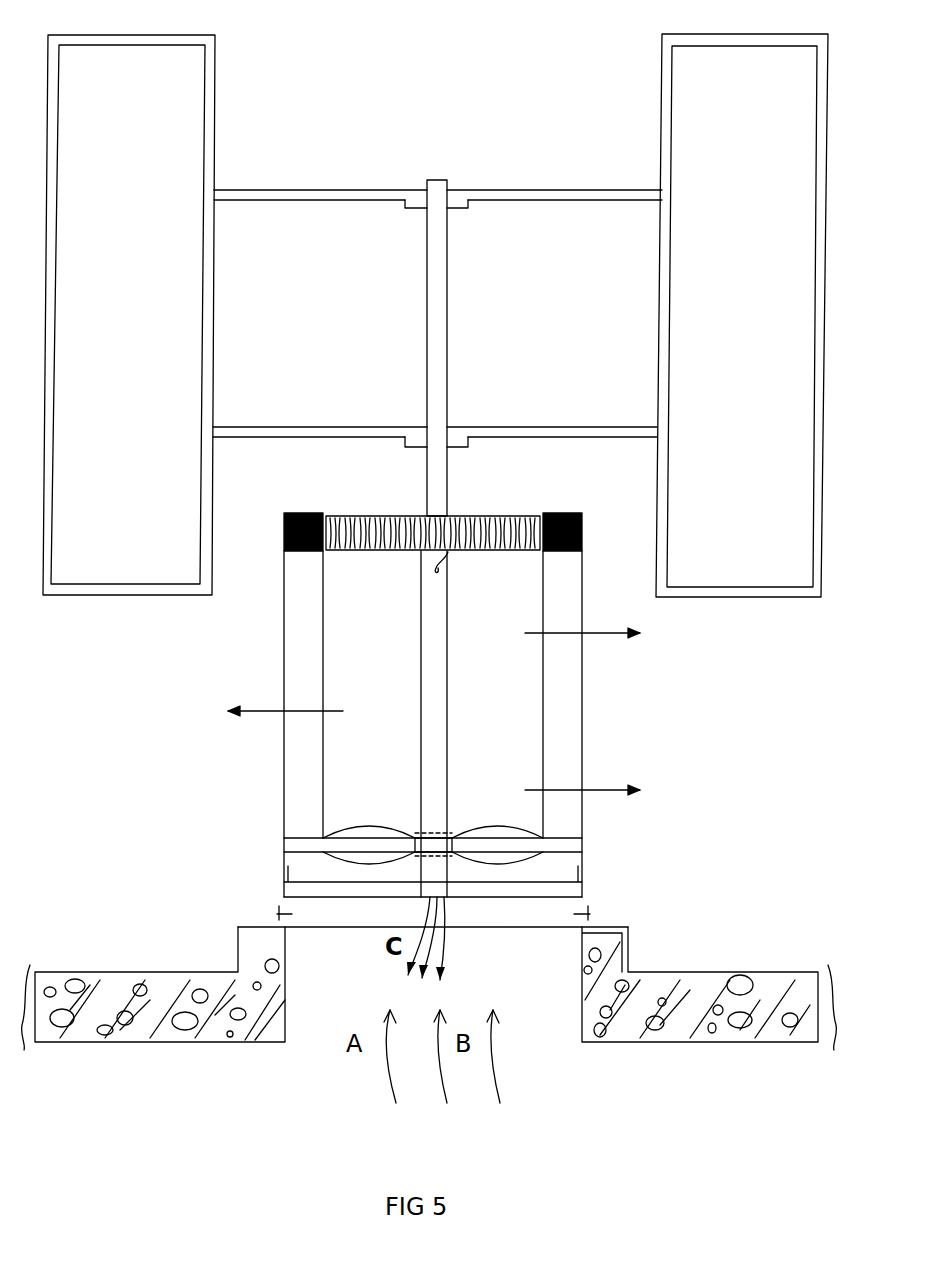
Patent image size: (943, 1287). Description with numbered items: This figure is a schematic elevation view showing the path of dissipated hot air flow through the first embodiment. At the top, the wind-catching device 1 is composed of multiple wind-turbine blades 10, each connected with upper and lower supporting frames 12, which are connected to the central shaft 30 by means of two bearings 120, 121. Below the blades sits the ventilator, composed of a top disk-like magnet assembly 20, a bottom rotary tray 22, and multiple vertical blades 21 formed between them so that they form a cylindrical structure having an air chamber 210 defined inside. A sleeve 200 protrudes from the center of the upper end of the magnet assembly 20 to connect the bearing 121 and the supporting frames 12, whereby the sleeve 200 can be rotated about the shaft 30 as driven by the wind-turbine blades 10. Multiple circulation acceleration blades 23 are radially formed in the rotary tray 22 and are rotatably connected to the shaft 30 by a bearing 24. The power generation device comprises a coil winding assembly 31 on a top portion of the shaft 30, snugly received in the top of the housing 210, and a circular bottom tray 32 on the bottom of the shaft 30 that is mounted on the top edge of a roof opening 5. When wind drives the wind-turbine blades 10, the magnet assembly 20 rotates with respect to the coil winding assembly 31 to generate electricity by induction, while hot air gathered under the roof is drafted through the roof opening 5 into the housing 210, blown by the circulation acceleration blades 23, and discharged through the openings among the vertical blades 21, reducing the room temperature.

The wind-catching device 1 is at (540, 135).
The wind-turbine blades 10 is at (188, 132).
The supporting frames 12 is at (228, 432).
The bearing 120 is at (448, 180).
The bearing 121 is at (426, 438).
The sleeve 200 is at (447, 470).
The disk-like magnet assembly 20 is at (566, 552).
The air chamber 210 is at (350, 612).
The vertical blades 21 is at (562, 770).
The coil winding assembly 31 is at (340, 552).
The shaft 30 is at (430, 655).
The circulation acceleration blades 23 is at (499, 830).
The bearing 24 is at (435, 840).
The circular bottom tray 32 is at (262, 889).
The bottom rotary tray 22 is at (590, 868).
The roof opening 5 is at (625, 955).